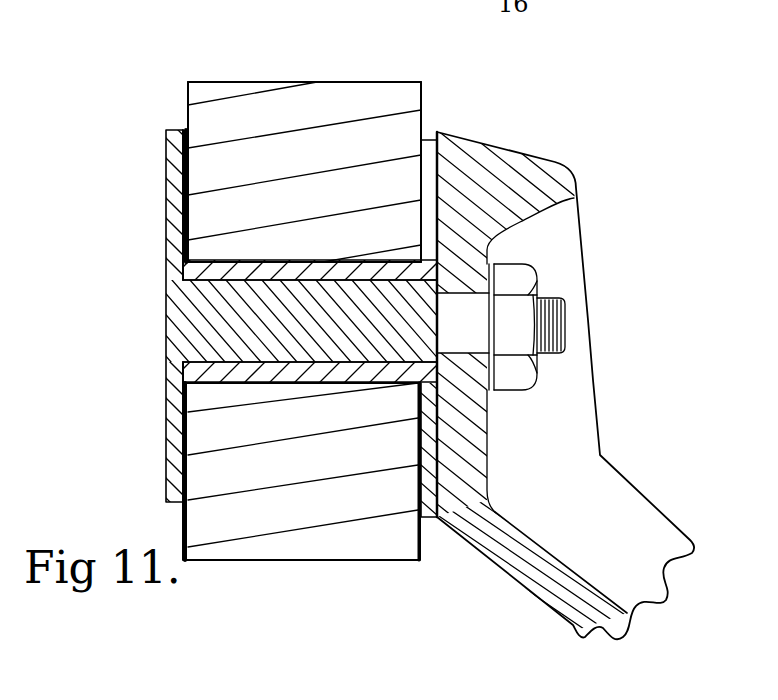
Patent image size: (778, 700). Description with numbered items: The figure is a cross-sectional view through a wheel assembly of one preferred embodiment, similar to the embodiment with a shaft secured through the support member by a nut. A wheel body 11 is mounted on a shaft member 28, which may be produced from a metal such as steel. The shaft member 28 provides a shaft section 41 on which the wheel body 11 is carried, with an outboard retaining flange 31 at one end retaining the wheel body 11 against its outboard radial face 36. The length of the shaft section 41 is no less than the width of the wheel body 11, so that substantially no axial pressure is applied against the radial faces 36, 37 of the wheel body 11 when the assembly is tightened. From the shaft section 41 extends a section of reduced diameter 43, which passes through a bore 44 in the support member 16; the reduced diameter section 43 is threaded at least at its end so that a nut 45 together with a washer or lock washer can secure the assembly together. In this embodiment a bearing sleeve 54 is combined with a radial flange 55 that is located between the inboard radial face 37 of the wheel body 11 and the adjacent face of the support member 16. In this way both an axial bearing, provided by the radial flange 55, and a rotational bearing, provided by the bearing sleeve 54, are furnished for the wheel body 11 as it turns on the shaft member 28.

The wheel body 11 is at (323, 110).
The support member 16 is at (500, 573).
The shaft member 28 is at (163, 361).
The outboard retaining flange 31 is at (167, 215).
The radial face of the wheel body 36 is at (188, 110).
The radial face of the wheel body 37 is at (422, 126).
The shaft section 41 is at (195, 326).
The section of reduced diameter 43 is at (460, 333).
The bore 44 is at (505, 307).
The nut 45 is at (518, 277).
The bearing sleeve 54 is at (290, 365).
The radial flange 55 is at (430, 437).